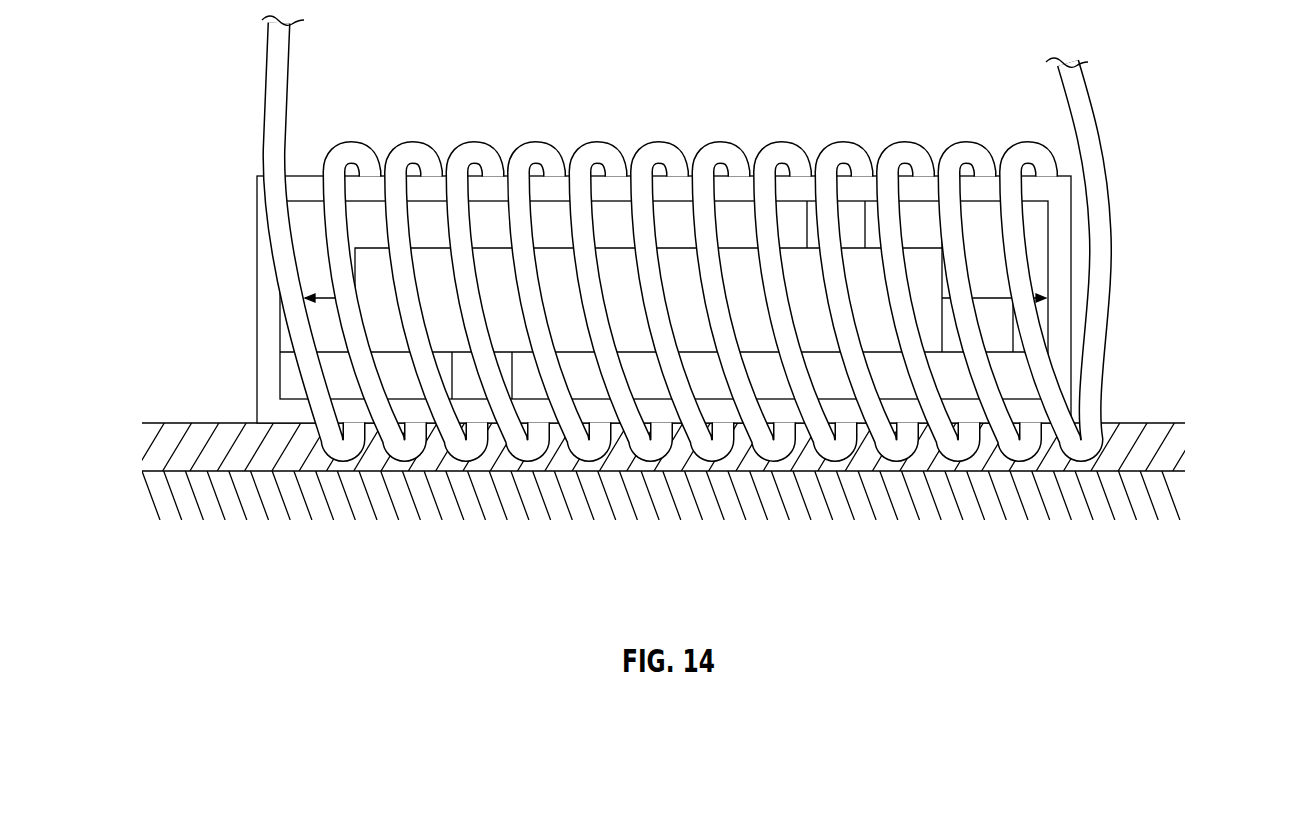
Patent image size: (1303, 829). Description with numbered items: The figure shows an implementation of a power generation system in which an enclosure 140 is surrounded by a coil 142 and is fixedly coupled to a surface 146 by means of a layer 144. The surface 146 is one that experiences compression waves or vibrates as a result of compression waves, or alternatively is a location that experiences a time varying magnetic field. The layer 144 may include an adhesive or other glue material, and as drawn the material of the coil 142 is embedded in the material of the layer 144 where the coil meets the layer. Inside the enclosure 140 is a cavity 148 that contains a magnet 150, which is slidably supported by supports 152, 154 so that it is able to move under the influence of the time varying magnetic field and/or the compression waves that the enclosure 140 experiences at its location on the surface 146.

The enclosure 140 is at (1072, 212).
The coil 142 is at (1097, 117).
The layer 144 is at (1160, 440).
The surface 146 is at (1180, 497).
The cavity 148 is at (979, 213).
The magnet 150 is at (912, 257).
The support 152 is at (852, 213).
The support 154 is at (467, 383).